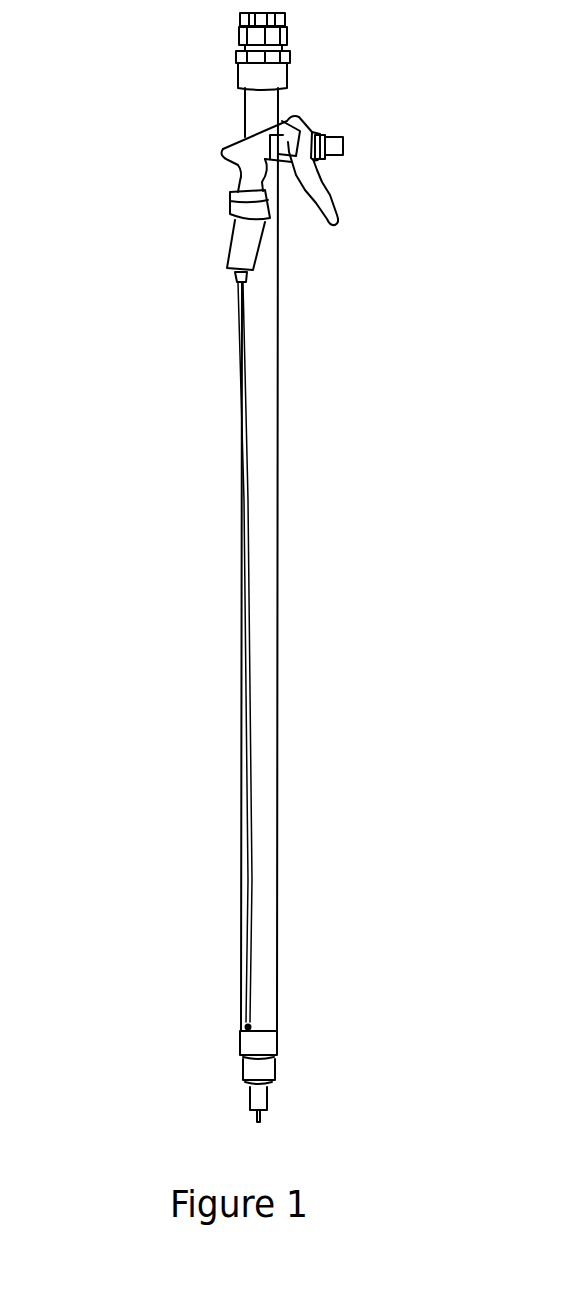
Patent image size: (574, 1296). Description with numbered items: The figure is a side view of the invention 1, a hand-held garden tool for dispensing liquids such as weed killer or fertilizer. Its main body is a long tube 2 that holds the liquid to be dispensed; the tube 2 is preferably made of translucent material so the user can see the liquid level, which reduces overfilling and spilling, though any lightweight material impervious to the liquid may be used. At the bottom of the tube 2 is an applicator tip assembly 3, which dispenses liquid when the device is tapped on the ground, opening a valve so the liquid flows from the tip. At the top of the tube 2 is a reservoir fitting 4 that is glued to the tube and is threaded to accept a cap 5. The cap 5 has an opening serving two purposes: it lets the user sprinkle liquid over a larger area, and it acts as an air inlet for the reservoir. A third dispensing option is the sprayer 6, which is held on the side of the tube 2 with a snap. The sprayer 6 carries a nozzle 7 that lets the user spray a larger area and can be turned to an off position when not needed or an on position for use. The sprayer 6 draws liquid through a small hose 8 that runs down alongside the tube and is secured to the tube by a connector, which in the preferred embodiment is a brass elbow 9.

The invention 1 is at (180, 609).
The tube 2 is at (288, 598).
The applicator tip assembly 3 is at (298, 1055).
The reservoir fitting 4 is at (295, 75).
The cap 5 is at (237, 24).
The sprayer 6 is at (230, 175).
The nozzle 7 is at (343, 155).
The small hose 8 is at (248, 522).
The brass elbow 9 is at (245, 1028).